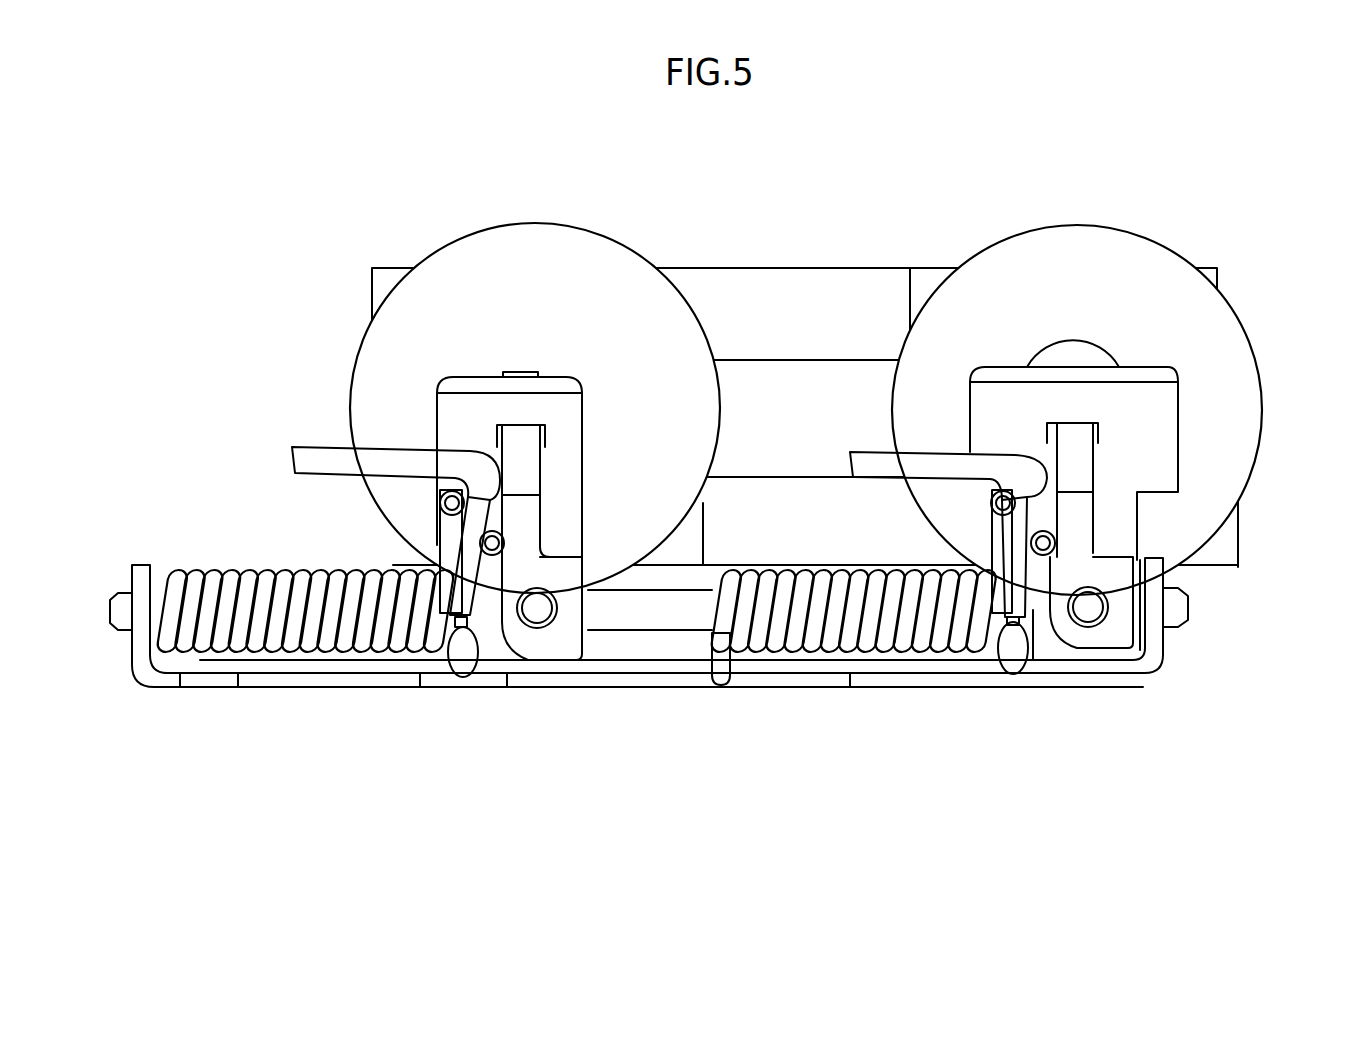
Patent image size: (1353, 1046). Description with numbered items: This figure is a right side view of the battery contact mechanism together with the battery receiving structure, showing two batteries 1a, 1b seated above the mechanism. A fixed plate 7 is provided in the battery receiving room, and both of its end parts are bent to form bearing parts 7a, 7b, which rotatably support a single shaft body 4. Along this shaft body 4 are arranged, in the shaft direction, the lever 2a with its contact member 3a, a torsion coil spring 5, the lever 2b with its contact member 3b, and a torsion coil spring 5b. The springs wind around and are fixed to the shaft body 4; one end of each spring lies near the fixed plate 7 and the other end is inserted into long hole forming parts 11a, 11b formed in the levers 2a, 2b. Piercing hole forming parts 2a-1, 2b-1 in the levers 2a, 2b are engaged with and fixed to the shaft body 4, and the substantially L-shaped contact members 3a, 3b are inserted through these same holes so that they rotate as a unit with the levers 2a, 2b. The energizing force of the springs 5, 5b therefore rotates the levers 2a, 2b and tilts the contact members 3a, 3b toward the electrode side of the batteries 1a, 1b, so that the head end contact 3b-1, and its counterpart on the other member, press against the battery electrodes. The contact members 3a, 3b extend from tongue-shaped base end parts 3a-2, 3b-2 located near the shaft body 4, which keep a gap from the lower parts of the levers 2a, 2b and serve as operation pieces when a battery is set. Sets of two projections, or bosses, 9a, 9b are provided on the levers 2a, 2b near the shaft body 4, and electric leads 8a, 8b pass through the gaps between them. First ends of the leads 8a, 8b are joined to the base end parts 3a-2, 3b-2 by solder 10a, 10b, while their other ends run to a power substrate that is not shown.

The battery 1a is at (1077, 248).
The battery 1b is at (590, 262).
The lever 2a is at (1017, 400).
The lever 2b is at (460, 415).
The piercing hole forming part 2a-1 is at (1083, 460).
The piercing hole forming part 2b-1 is at (527, 434).
The contact member 3a is at (1050, 490).
The contact member 3b is at (530, 557).
The contact 3b-1 is at (520, 372).
The base end part 3a-2 is at (1105, 650).
The base end part 3b-2 is at (530, 650).
The shaft body 4 is at (1188, 610).
The torsion coil spring 5 is at (865, 640).
The torsion coil spring 5b is at (298, 648).
The fixed plate 7 is at (722, 680).
The bearing part 7a is at (1160, 598).
The bearing part 7b is at (140, 565).
The electric lead 8a is at (870, 458).
The electric lead 8b is at (316, 456).
The projections 9a is at (1056, 540).
The projections 9b is at (465, 503).
The solder 10a is at (1018, 668).
The solder 10b is at (472, 673).
The long hole forming part 11a is at (1100, 652).
The long hole forming part 11b is at (545, 640).